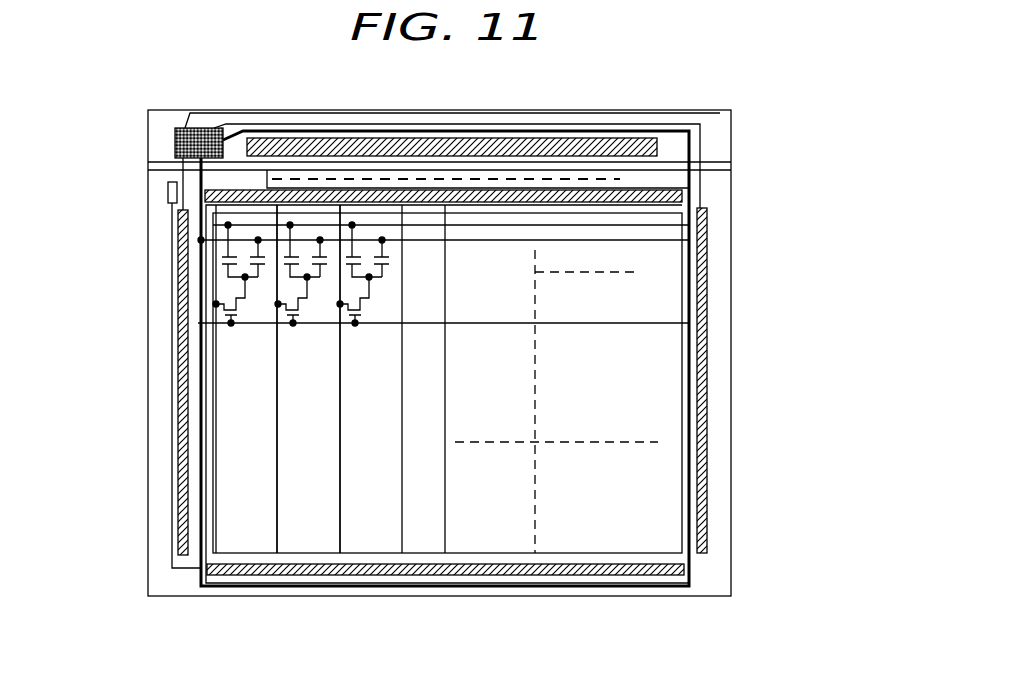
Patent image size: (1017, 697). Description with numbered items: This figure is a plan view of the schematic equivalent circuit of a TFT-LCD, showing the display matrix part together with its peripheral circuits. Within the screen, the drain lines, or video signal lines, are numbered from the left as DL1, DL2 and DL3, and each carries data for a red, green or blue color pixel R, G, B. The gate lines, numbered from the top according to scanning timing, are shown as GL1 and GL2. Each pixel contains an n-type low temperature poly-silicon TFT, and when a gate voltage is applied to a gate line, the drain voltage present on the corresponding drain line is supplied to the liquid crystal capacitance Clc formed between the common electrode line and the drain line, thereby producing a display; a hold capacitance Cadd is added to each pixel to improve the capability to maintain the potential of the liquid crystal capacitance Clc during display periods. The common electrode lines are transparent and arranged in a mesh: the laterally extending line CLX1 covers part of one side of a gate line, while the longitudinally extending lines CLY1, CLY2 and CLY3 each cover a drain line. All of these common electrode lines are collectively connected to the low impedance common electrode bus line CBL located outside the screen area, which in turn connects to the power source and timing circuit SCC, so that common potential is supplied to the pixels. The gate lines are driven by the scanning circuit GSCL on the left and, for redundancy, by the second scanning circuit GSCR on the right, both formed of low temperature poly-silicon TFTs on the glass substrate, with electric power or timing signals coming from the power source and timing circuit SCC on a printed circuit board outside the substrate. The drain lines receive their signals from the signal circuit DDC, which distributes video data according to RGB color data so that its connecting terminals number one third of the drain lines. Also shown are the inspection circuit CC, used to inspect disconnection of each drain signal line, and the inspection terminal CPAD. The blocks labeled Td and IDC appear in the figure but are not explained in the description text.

The power source and timing circuit SCC is at (203, 126).
The dummy transistor region Td is at (270, 178).
The signal circuit DDC is at (352, 190).
The integrated driver circuit IDC is at (553, 147).
The inspection terminal CPAD is at (166, 192).
The hold capacitance Cadd is at (220, 271).
The thin film transistor TFT is at (215, 316).
The scanning circuit GSCL is at (183, 433).
The scanning circuit GSCR is at (708, 260).
The liquid crystal capacitance Clc is at (262, 267).
The common electrode line CLY1 is at (278, 338).
The common electrode line CLY2 is at (340, 348).
The common electrode line CLY3 is at (402, 352).
The drain line DL1 is at (217, 440).
The drain line DL2 is at (277, 438).
The drain line DL3 is at (340, 440).
The gate line GL1 is at (468, 226).
The gate line GL2 is at (458, 327).
The common electrode line CLX1 is at (582, 247).
The inspection circuit CC is at (436, 577).
The common electrode bus line CBL is at (620, 587).
The red color pixel R is at (178, 297).
The green color pixel G is at (304, 274).
The blue color pixel B is at (364, 274).